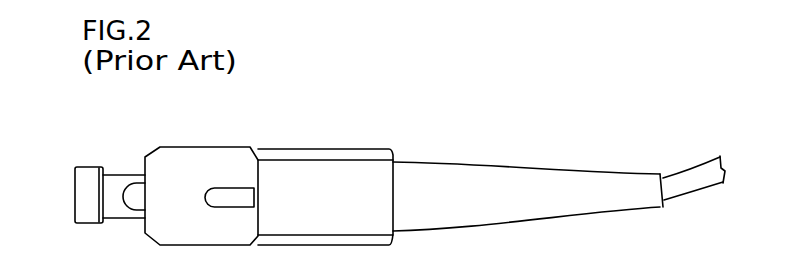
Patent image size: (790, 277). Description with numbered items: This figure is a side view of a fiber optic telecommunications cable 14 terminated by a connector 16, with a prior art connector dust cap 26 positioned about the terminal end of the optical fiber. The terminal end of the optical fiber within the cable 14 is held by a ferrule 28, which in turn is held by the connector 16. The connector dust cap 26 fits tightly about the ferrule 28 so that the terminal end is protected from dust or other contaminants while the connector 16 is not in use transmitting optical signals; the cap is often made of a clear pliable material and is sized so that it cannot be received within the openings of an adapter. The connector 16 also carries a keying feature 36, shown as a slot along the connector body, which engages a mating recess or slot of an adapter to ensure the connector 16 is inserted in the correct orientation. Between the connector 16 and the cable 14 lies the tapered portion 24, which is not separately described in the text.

The cable 14 is at (687, 182).
The connector 16 is at (298, 178).
The strain relief boot 24 is at (476, 190).
The connector dust cap 26 is at (85, 187).
The ferrule 28 is at (131, 192).
The keying feature 36 is at (217, 198).